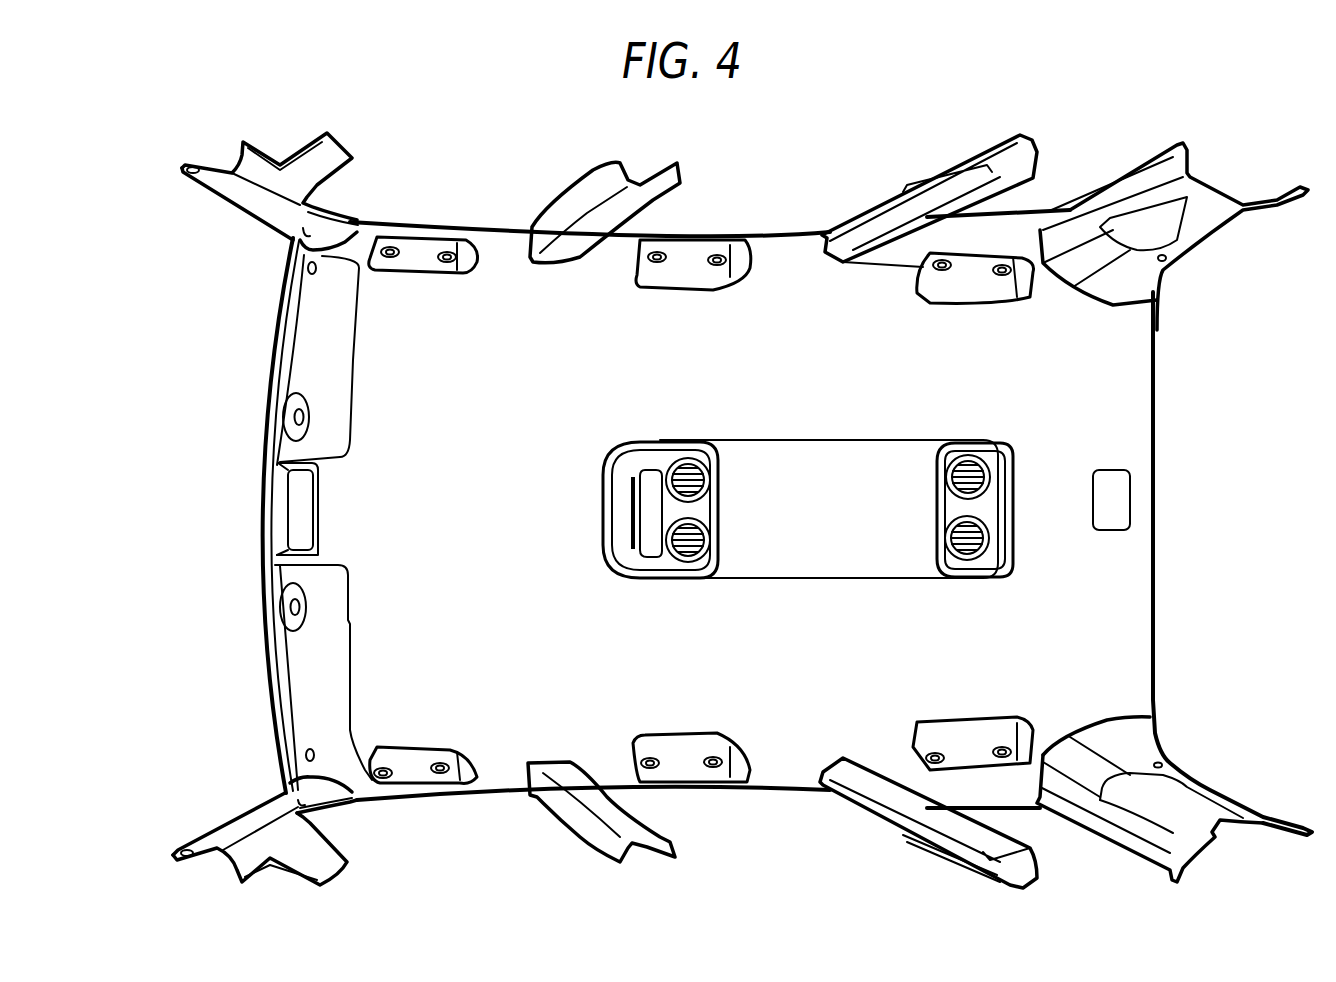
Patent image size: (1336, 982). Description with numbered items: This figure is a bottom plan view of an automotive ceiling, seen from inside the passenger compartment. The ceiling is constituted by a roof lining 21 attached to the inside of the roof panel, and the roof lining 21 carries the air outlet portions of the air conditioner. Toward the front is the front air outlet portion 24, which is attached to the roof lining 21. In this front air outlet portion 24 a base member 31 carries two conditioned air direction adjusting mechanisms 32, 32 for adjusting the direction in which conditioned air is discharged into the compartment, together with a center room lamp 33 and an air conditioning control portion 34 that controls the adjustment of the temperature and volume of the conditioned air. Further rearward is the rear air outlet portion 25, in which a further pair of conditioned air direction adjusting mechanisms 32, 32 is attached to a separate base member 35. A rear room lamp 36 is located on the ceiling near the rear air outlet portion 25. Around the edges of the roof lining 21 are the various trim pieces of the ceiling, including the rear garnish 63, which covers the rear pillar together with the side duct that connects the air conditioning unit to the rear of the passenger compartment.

The roof lining 21 is at (1118, 590).
The front air outlet portion 24 is at (656, 448).
The rear air outlet portion 25 is at (946, 448).
The base member 31 is at (718, 500).
The conditioned air direction adjusting mechanism 32 is at (690, 458).
The center room lamp 33 is at (652, 557).
The air conditioning control portion 34 is at (628, 512).
The base member 35 is at (935, 503).
The rear room lamp 36 is at (1113, 470).
The rear garnish 63 is at (1193, 785).